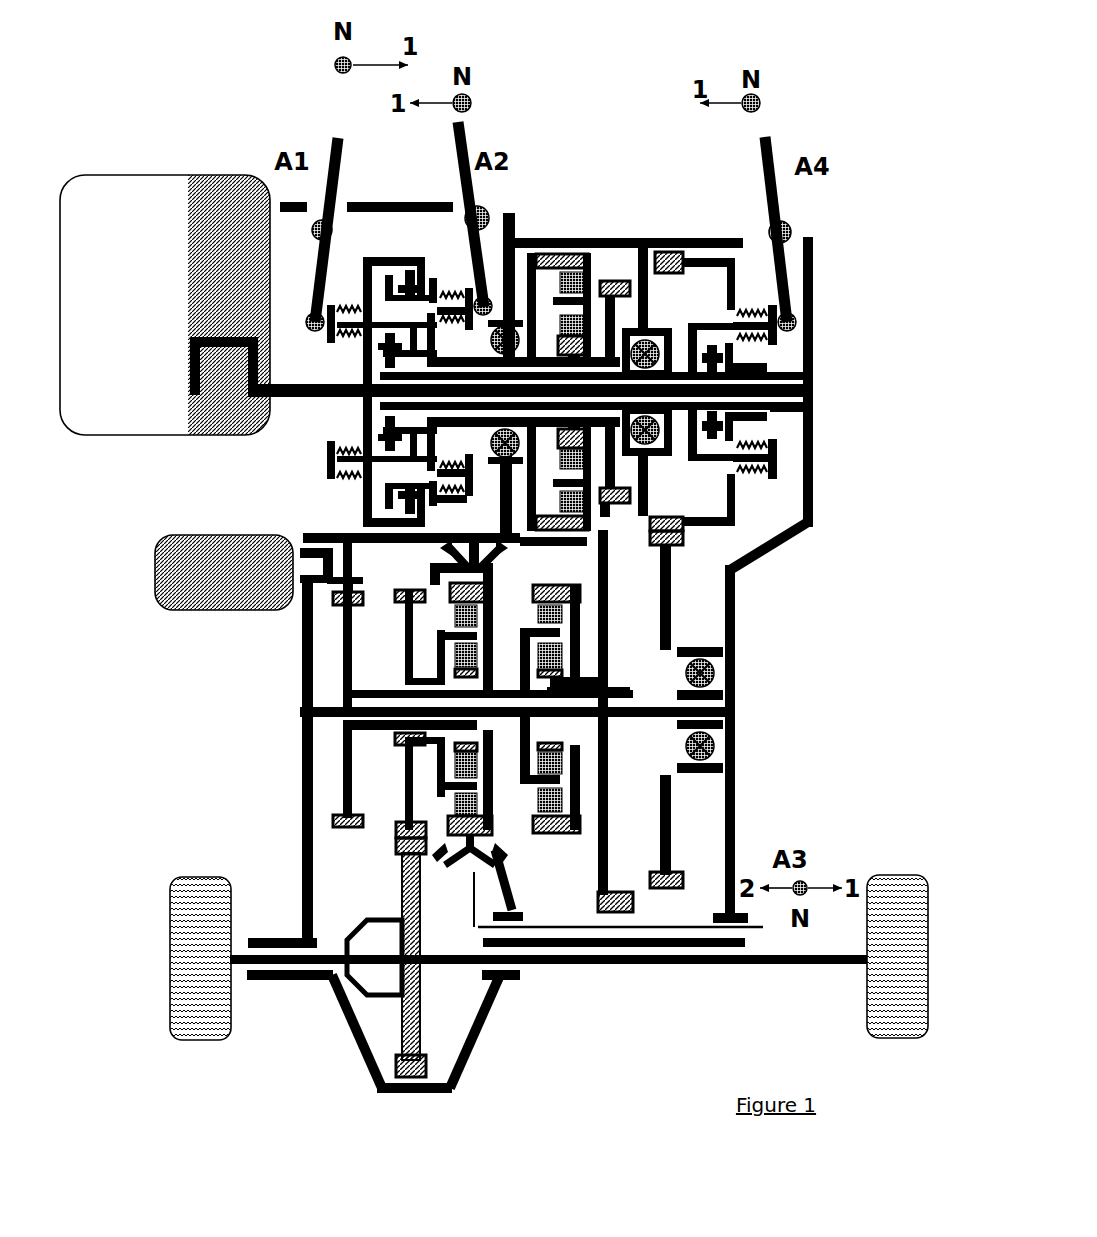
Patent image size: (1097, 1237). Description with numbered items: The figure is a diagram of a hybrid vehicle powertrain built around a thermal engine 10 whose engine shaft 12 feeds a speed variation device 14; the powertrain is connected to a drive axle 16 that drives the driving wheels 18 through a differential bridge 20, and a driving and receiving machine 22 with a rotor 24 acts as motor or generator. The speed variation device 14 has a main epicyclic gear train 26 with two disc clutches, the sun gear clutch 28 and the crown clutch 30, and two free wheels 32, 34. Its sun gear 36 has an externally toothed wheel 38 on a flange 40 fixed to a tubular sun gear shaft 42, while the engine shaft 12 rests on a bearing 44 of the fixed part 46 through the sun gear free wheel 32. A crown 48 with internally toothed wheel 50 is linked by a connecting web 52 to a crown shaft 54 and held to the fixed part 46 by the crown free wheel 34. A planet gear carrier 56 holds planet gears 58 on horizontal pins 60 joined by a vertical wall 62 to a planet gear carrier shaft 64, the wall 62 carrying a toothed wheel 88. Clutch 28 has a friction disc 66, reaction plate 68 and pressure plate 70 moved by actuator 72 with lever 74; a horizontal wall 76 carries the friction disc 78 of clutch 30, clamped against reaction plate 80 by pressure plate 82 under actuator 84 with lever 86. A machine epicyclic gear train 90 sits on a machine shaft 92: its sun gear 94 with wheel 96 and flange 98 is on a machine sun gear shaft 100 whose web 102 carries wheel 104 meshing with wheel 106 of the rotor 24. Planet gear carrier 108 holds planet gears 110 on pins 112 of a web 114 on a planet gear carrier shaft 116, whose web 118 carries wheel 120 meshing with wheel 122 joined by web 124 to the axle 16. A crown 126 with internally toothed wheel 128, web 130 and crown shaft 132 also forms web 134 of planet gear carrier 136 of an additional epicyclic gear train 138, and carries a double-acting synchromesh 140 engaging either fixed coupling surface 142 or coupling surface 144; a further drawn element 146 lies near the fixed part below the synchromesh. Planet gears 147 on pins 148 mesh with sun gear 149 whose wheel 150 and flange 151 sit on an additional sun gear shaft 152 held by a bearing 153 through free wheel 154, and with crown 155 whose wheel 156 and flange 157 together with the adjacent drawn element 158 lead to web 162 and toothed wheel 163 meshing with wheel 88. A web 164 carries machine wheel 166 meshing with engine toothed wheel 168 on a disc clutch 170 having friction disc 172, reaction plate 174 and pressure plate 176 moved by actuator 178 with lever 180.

The thermal engine 10 is at (243, 158).
The engine shaft 12 is at (310, 403).
The speed variation device 14 is at (596, 210).
The drive axle 16 is at (812, 963).
The driving wheels 18 is at (225, 1045).
The differential bridge 20 is at (455, 1012).
The driving and receiving machine 22 is at (248, 628).
The rotor 24 is at (330, 545).
The main epicyclic gear train 26 is at (630, 230).
The sun gear clutch 28 is at (375, 373).
The crown clutch 30 is at (380, 262).
The sun gear free wheel 32 is at (680, 430).
The crown free wheel 34 is at (488, 444).
The sun gear 36 is at (556, 470).
The externally toothed wheel 38 is at (557, 344).
The flange 40 is at (608, 440).
The sun gear shaft 42 is at (690, 345).
The bearing 44 is at (652, 328).
The fixed part 46 is at (712, 230).
The crown 48 is at (553, 250).
The internally toothed wheel 50 is at (575, 248).
The connecting web 52 is at (530, 285).
The crown shaft 54 is at (485, 357).
The planet gear carrier 56 is at (590, 282).
The planet gears 58 is at (608, 297).
The horizontal pin 60 is at (556, 305).
The vertical wall 62 is at (640, 435).
The planet gear carrier shaft 64 is at (553, 447).
The friction disc 66 is at (380, 426).
The reaction plate 68 is at (360, 505).
The pressure plate 70 is at (395, 440).
The clutch actuator 72 is at (330, 128).
The lever 74 is at (342, 175).
The horizontal wall 76 is at (336, 230).
The friction disc 78 is at (420, 278).
The reaction plate 80 is at (440, 497).
The pressure plate 82 is at (410, 280).
The clutch actuator 84 is at (480, 130).
The lever 86 is at (465, 190).
The externally toothed horizontal wheel 88 is at (650, 510).
The machine epicyclic gear train 90 is at (470, 565).
The machine shaft 92 is at (733, 680).
The sun gear 94 is at (478, 720).
The externally toothed wheel 96 is at (560, 640).
The flange 98 is at (490, 696).
The machine sun gear shaft 100 is at (395, 689).
The web 102 is at (345, 605).
The externally toothed wheel 104 is at (348, 820).
The toothed wheel 106 is at (348, 540).
The planet gear carrier 108 is at (485, 635).
The planet gears 110 is at (490, 825).
The planet gear pins 112 is at (420, 775).
The web 114 is at (440, 795).
The planet gear carrier shaft 116 is at (405, 725).
The web 118 is at (410, 660).
The externally toothed wheel 120 is at (395, 830).
The toothed wheel 122 is at (440, 1082).
The web 124 is at (395, 1005).
The crown 126 is at (492, 840).
The internally toothed wheel 128 is at (490, 610).
The web 130 is at (480, 805).
The crown shaft 132 is at (560, 740).
The web 134 is at (575, 800).
The planet gear carrier 136 is at (565, 628).
The additional epicyclic gear train 138 is at (565, 845).
The controlled coupling 140 is at (462, 880).
The fixed coupling surface 142 is at (505, 882).
The coupling surface 144 is at (440, 870).
The housing 146 is at (632, 945).
The planet gears 147 is at (580, 822).
The planet gear pins 148 is at (575, 665).
The sun gear 149 is at (560, 688).
The externally toothed wheel 150 is at (575, 770).
The flange 151 is at (672, 795).
The additional sun gear shaft 152 is at (740, 723).
The bearing 153 is at (715, 648).
The free wheel 154 is at (678, 665).
The crown 155 is at (580, 598).
The externally toothed wheel 156 is at (585, 600).
The flange 157 is at (575, 615).
The hub 158 is at (580, 650).
The web 162 is at (608, 862).
The toothed wheel 163 is at (635, 903).
The web 164 is at (685, 882).
The externally toothed machine wheel 166 is at (738, 862).
The engine toothed wheel 168 is at (706, 240).
The controlled coupling 170 is at (762, 497).
The friction disc 172 is at (725, 455).
The reaction plate 174 is at (770, 550).
The pressure plate 176 is at (735, 312).
The clutch actuator 178 is at (782, 135).
The lever 180 is at (780, 195).